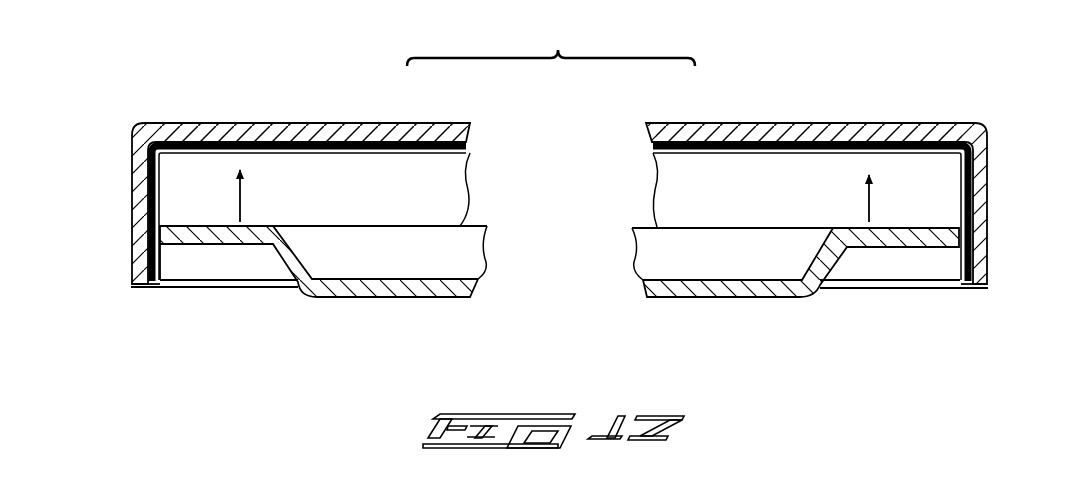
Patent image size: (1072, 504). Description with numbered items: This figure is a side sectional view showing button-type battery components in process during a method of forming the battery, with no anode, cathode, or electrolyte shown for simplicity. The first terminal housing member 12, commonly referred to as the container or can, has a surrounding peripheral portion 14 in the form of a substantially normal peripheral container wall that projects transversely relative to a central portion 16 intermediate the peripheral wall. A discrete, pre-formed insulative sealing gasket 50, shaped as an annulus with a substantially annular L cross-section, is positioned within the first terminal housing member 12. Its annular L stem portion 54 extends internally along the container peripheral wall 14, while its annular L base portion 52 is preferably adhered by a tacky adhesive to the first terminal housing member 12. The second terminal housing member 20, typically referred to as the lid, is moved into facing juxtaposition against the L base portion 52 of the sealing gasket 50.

The first terminal housing member 12 is at (178, 118).
The surrounding peripheral portion 14 is at (131, 200).
The central portion 16 is at (350, 123).
The second terminal housing member 20 is at (347, 328).
The insulative sealing gasket 50 is at (153, 289).
The annular L base portion 52 is at (207, 147).
The annular L stem portion 54 is at (150, 238).